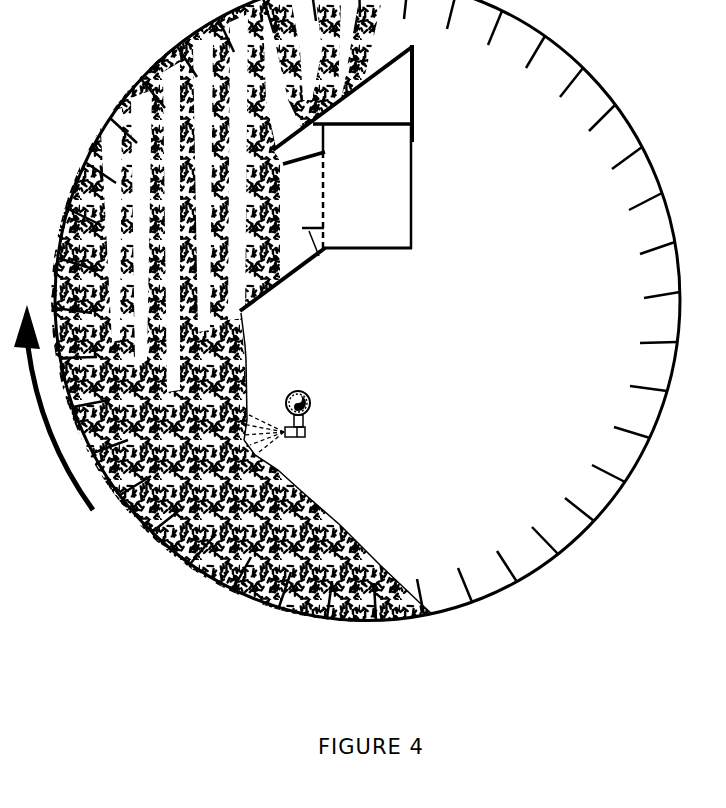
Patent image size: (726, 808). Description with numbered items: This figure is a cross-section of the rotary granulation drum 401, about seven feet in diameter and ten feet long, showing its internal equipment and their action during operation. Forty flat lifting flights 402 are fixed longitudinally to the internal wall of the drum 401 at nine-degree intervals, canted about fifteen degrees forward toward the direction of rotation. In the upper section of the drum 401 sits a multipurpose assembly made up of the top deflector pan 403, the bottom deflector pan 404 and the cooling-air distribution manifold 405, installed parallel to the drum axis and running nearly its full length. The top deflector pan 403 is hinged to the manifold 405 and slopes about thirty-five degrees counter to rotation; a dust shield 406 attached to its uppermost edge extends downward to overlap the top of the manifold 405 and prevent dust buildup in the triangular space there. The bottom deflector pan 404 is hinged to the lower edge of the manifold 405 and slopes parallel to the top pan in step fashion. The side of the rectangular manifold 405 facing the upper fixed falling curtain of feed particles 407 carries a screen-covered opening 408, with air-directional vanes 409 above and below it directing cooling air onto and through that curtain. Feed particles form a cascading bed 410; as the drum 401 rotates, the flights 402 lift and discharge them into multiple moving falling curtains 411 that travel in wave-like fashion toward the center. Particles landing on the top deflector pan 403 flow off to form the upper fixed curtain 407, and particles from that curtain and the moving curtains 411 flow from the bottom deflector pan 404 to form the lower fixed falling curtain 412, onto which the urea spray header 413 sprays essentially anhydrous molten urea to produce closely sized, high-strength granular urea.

The rotary granulation drum 401 is at (665, 215).
The lifting flights 402 is at (641, 387).
The top deflector pan 403 is at (392, 62).
The bottom deflector pan 404 is at (241, 313).
The cooling-air distribution manifold 405 is at (414, 222).
The dust shield 406 is at (414, 90).
The upper fixed falling curtain of feed particles 407 is at (265, 292).
The screen-covered opening 408 is at (328, 193).
The air-directional vanes 409 is at (327, 150).
The cascading bed 410 is at (305, 489).
The moving falling curtains 411 is at (242, 331).
The lower fixed falling curtain of feed particles 412 is at (242, 355).
The urea spray header 413 is at (310, 404).